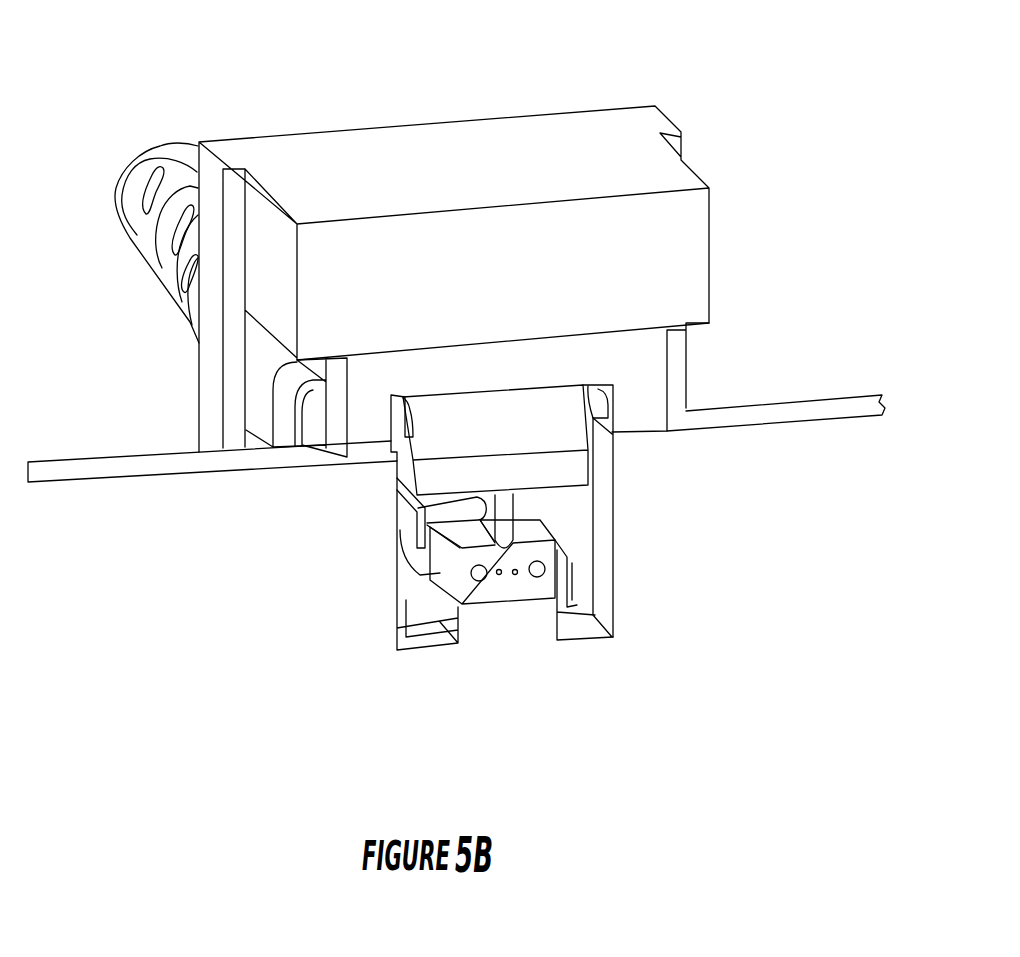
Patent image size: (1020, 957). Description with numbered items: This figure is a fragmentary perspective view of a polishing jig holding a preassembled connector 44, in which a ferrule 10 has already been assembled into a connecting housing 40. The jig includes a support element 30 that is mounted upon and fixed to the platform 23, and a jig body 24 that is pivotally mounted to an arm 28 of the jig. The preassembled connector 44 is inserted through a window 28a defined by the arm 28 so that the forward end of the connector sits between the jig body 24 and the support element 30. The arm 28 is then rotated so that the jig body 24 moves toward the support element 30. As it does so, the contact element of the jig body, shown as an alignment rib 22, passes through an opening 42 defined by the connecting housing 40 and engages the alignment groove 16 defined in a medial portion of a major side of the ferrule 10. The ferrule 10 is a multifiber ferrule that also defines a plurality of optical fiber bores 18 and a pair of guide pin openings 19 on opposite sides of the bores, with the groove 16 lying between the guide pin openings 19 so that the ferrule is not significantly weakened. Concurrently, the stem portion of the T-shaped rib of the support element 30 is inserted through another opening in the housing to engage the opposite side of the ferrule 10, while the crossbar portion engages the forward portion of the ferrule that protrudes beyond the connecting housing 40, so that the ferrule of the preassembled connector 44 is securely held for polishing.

The ferrule 10 is at (545, 590).
The groove 16 is at (504, 582).
The optical fiber bores 18 is at (510, 590).
The guide pin openings 19 is at (535, 578).
The alignment rib 22 is at (505, 530).
The platform 23 is at (750, 452).
The jig body 24 is at (580, 467).
The arm 28 is at (620, 132).
The window 28a is at (580, 555).
The support element 30 is at (545, 618).
The connecting housing 40 is at (430, 517).
The opening 42 is at (480, 500).
The connector 44 is at (283, 418).